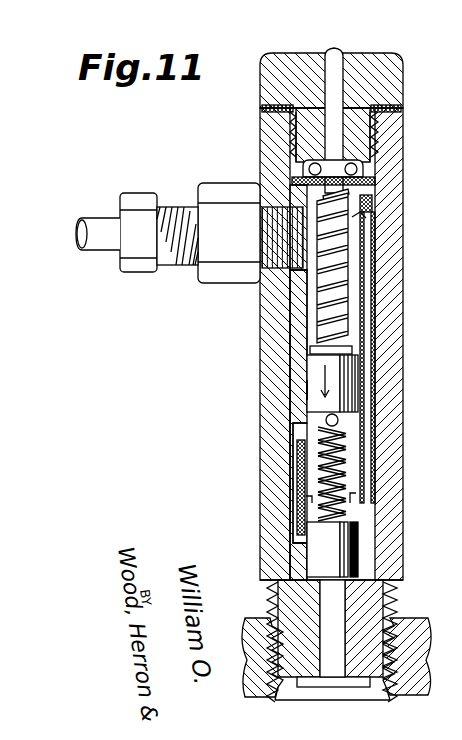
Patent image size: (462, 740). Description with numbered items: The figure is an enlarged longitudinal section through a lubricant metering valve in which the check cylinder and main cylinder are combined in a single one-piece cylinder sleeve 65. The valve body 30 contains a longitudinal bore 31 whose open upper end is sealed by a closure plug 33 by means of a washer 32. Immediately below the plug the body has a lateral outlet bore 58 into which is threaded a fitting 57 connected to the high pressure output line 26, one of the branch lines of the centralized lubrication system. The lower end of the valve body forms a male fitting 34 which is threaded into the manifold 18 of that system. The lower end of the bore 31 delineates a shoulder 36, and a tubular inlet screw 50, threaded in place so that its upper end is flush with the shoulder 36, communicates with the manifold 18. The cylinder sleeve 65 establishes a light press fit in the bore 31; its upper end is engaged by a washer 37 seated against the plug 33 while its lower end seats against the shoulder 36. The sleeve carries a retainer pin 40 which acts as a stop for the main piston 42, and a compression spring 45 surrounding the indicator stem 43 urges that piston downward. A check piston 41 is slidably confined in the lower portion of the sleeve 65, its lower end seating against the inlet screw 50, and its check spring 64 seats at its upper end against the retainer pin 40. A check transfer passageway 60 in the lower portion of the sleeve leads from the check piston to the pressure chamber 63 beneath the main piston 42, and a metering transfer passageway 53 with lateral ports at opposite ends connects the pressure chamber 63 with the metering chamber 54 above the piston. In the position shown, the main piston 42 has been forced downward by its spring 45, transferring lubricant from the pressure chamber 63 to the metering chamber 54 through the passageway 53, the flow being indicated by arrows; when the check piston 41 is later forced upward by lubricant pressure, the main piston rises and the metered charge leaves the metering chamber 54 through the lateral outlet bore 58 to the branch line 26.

The manifold 18 is at (412, 663).
The high pressure output line 26 is at (103, 218).
The valve body 30 is at (393, 357).
The longitudinal bore 31 is at (373, 322).
The washer 32 is at (403, 108).
The closure plug 33 is at (380, 82).
The male fitting 34 is at (380, 615).
The shoulder 36 is at (397, 580).
The washer 37 is at (373, 181).
The retainer pin 40 is at (340, 420).
The check piston 41 is at (303, 550).
The main piston 42 is at (313, 370).
The indicator stem 43 is at (341, 50).
The compression spring 45 is at (262, 306).
The tubular inlet screw 50 is at (285, 602).
The metering transfer passageway 53 is at (365, 392).
The metering chamber 54 is at (352, 292).
The fitting 57 is at (141, 193).
The lateral outlet bore 58 is at (257, 178).
The check transfer passageway 60 is at (293, 467).
The pressure chamber 63 is at (313, 500).
The check spring 64 is at (345, 470).
The cylinder sleeve 65 is at (300, 390).